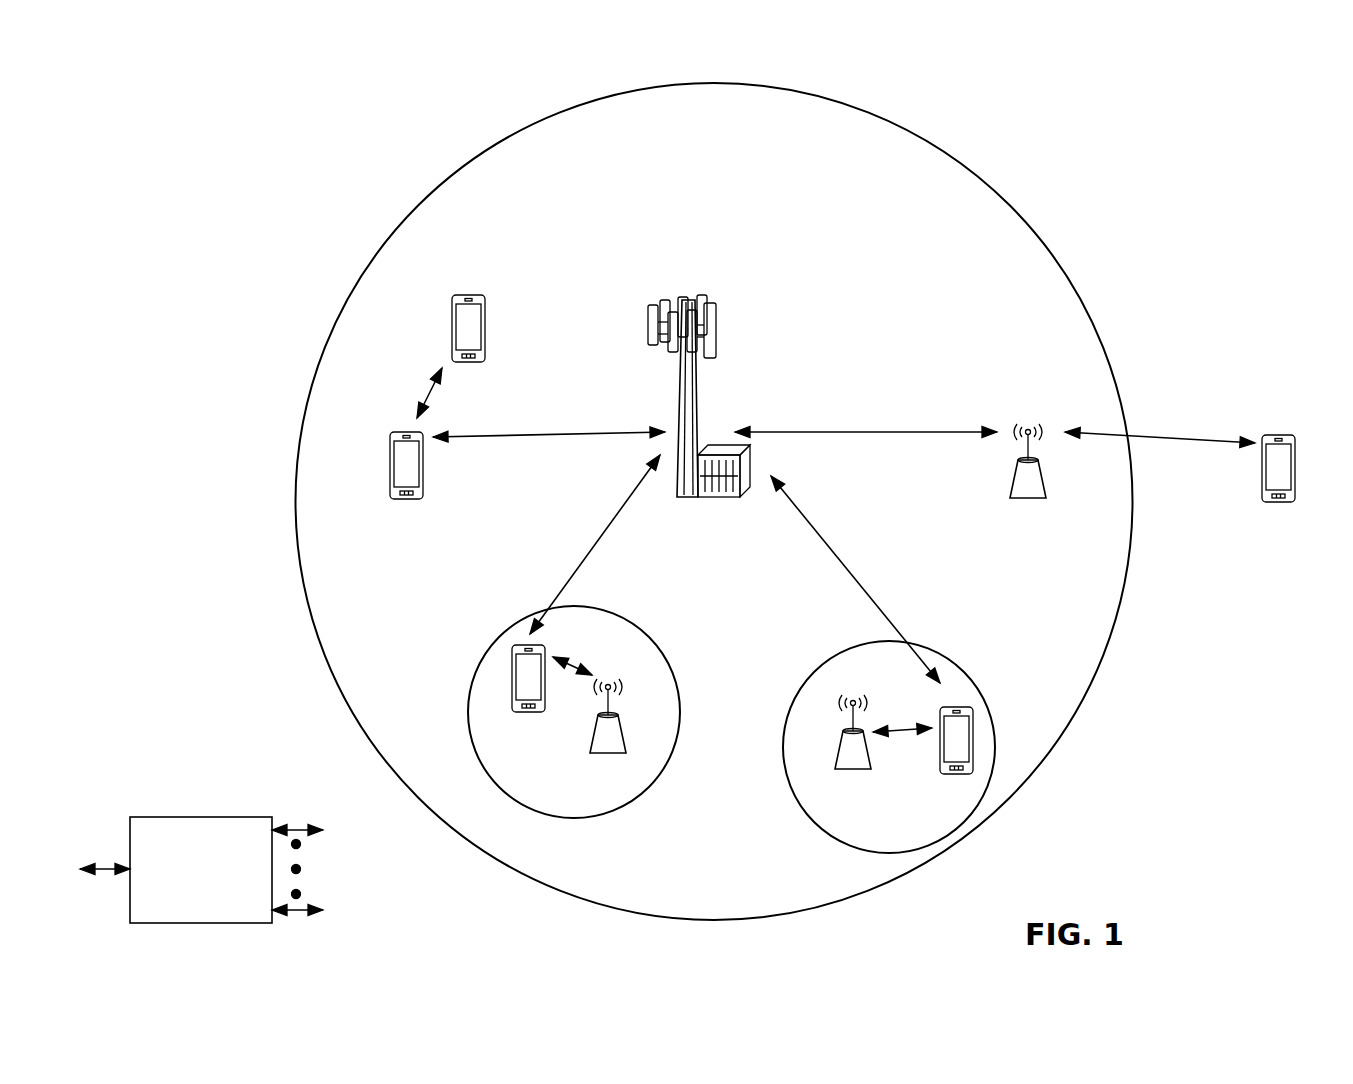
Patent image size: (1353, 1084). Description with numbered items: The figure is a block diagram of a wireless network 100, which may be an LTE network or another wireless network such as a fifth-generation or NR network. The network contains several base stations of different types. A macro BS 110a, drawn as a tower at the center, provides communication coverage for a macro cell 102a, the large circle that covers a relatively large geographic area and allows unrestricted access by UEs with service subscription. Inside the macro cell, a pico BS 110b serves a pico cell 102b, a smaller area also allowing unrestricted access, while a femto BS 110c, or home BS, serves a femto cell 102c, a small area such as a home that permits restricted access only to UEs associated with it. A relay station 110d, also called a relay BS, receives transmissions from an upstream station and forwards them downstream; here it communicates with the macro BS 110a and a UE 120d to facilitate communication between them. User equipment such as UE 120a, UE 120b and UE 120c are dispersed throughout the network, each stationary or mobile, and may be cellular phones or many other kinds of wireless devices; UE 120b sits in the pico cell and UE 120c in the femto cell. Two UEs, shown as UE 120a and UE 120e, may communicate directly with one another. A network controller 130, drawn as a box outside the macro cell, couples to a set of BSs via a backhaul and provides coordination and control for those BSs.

The wireless network 100 is at (180, 75).
The macro cell 102a is at (986, 183).
The pico cell 102b is at (663, 650).
The femto cell 102c is at (830, 660).
The macro BS 110a is at (718, 290).
The pico BS 110b is at (627, 740).
The femto BS 110c is at (838, 757).
The relay station 110d is at (1030, 424).
The UE 120a is at (390, 460).
The UE 120b is at (516, 713).
The UE 120c is at (940, 775).
The UE 120d is at (1296, 433).
The UE 120e is at (452, 313).
The network controller 130 is at (200, 817).